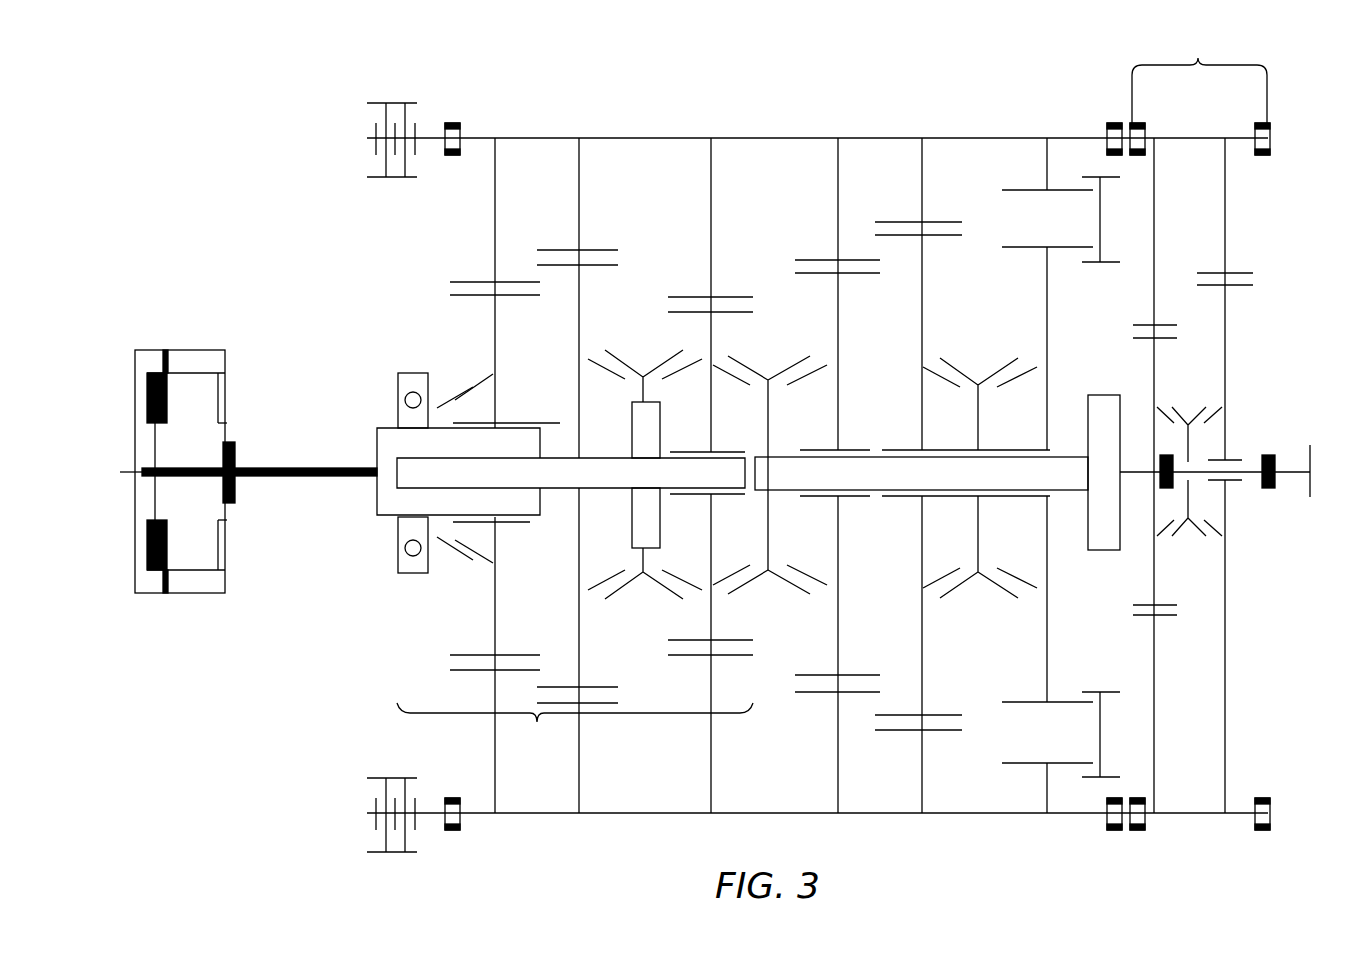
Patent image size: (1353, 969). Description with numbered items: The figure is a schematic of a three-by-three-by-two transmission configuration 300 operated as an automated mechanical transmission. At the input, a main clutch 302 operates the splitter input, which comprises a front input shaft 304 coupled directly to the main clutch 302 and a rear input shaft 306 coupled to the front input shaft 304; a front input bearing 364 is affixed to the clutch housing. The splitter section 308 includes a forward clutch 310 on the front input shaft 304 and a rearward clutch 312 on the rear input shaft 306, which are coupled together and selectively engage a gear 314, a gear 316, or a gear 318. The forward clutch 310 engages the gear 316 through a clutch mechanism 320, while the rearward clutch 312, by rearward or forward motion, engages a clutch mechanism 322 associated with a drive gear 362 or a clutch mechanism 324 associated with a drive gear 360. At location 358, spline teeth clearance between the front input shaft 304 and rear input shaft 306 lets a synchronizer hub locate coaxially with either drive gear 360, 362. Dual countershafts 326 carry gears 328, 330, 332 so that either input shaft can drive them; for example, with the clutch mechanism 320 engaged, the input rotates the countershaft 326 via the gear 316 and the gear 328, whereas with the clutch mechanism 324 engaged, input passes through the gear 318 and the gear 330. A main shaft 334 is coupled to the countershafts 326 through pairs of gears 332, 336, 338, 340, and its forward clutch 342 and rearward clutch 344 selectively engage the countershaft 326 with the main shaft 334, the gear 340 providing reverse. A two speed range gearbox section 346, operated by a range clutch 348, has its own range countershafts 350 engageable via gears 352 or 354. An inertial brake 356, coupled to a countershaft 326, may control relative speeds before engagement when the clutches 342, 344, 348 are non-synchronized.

The transmission configuration 300 is at (928, 62).
The main clutch 302 is at (236, 330).
The front input shaft 304 is at (260, 465).
The rear input shaft 306 is at (625, 455).
The splitter section 308 is at (575, 731).
The forward clutch 310 is at (455, 565).
The rearward clutch 312 is at (625, 365).
The gear 314 is at (708, 765).
The gear 316 is at (493, 770).
The gear 318 is at (585, 760).
The clutch mechanism 320 is at (455, 365).
The clutch mechanism 322 is at (675, 350).
The clutch mechanism 324 is at (603, 333).
The countershaft 326 is at (742, 132).
The gear 328 is at (492, 240).
The gear 330 is at (586, 195).
The gear 332 is at (715, 240).
The main shaft 334 is at (880, 490).
The gear 336 is at (853, 290).
The gear 338 is at (962, 250).
The gear 340 is at (1068, 270).
The forward clutch 342 is at (770, 598).
The rearward clutch 344 is at (985, 597).
The two speed range gearbox section 346 is at (1199, 76).
The range clutch 348 is at (1195, 405).
The range countershaft 350 is at (1182, 132).
The gear 352 is at (1170, 305).
The gear 354 is at (1242, 318).
The inertial brake 356 is at (378, 92).
The location 358 is at (380, 510).
The drive gear 360 is at (580, 322).
The drive gear 362 is at (715, 340).
The front input bearing 364 is at (398, 385).